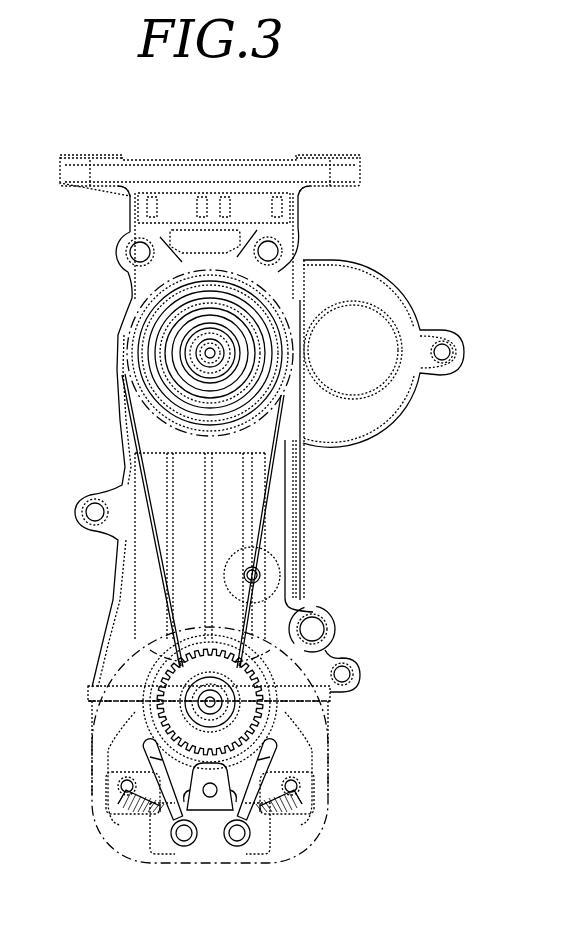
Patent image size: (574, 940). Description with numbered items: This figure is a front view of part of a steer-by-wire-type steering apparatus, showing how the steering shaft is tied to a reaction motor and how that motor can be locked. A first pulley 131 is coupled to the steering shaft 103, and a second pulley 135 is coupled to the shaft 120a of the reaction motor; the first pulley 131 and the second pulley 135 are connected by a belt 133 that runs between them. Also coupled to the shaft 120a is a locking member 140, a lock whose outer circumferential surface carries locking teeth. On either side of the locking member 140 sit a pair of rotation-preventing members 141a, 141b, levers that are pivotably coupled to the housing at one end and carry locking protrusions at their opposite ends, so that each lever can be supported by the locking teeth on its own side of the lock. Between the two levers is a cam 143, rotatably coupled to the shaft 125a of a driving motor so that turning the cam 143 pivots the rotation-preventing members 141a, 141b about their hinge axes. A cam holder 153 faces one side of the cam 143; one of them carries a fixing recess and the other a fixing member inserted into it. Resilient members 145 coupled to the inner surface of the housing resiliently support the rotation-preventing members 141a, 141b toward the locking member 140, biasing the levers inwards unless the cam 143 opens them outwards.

The steering shaft 103 is at (178, 353).
The first pulley 131 is at (283, 324).
The belt 133 is at (262, 487).
The second pulley 135 is at (210, 686).
The locking member 140 is at (245, 683).
The shaft of the reaction motor 120a is at (178, 668).
The rotation-preventing member 141a is at (148, 750).
The rotation-preventing member 141b is at (256, 760).
The cam 143 is at (217, 775).
The resilient member 145 is at (310, 800).
The cam holder 153 is at (147, 807).
The shaft of the driving motor 125a is at (208, 798).